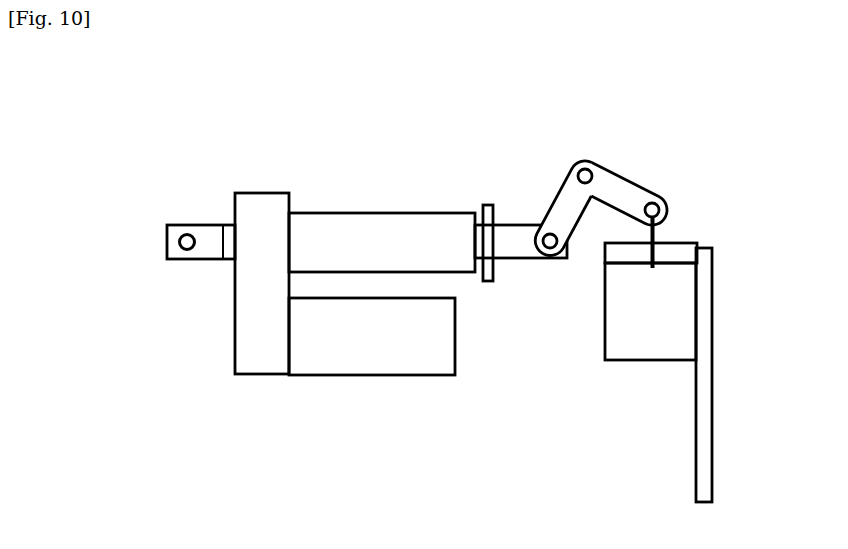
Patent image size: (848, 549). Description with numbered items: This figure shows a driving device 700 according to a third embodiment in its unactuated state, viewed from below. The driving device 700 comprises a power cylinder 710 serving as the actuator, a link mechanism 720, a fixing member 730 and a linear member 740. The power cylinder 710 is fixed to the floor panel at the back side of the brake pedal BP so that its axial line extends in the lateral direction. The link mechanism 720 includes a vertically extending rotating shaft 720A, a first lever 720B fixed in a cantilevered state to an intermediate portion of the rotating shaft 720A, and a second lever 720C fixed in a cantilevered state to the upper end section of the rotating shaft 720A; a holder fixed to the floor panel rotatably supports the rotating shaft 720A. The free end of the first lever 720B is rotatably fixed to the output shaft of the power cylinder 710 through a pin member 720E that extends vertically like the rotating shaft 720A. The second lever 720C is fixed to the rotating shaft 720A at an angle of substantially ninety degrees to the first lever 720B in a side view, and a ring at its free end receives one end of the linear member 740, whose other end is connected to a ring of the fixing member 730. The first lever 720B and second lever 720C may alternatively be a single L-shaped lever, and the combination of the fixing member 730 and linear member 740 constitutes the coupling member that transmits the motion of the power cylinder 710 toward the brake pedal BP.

The driving device 700 is at (283, 174).
The power cylinder 710 is at (360, 213).
The link mechanism 720 is at (583, 239).
The rotating shaft 720A is at (585, 168).
The first lever 720B is at (552, 199).
The second lever 720C is at (636, 182).
The pin member 720E is at (549, 250).
The fixing member 730 is at (685, 243).
The linear member 740 is at (655, 253).
The brake pedal BP is at (678, 326).